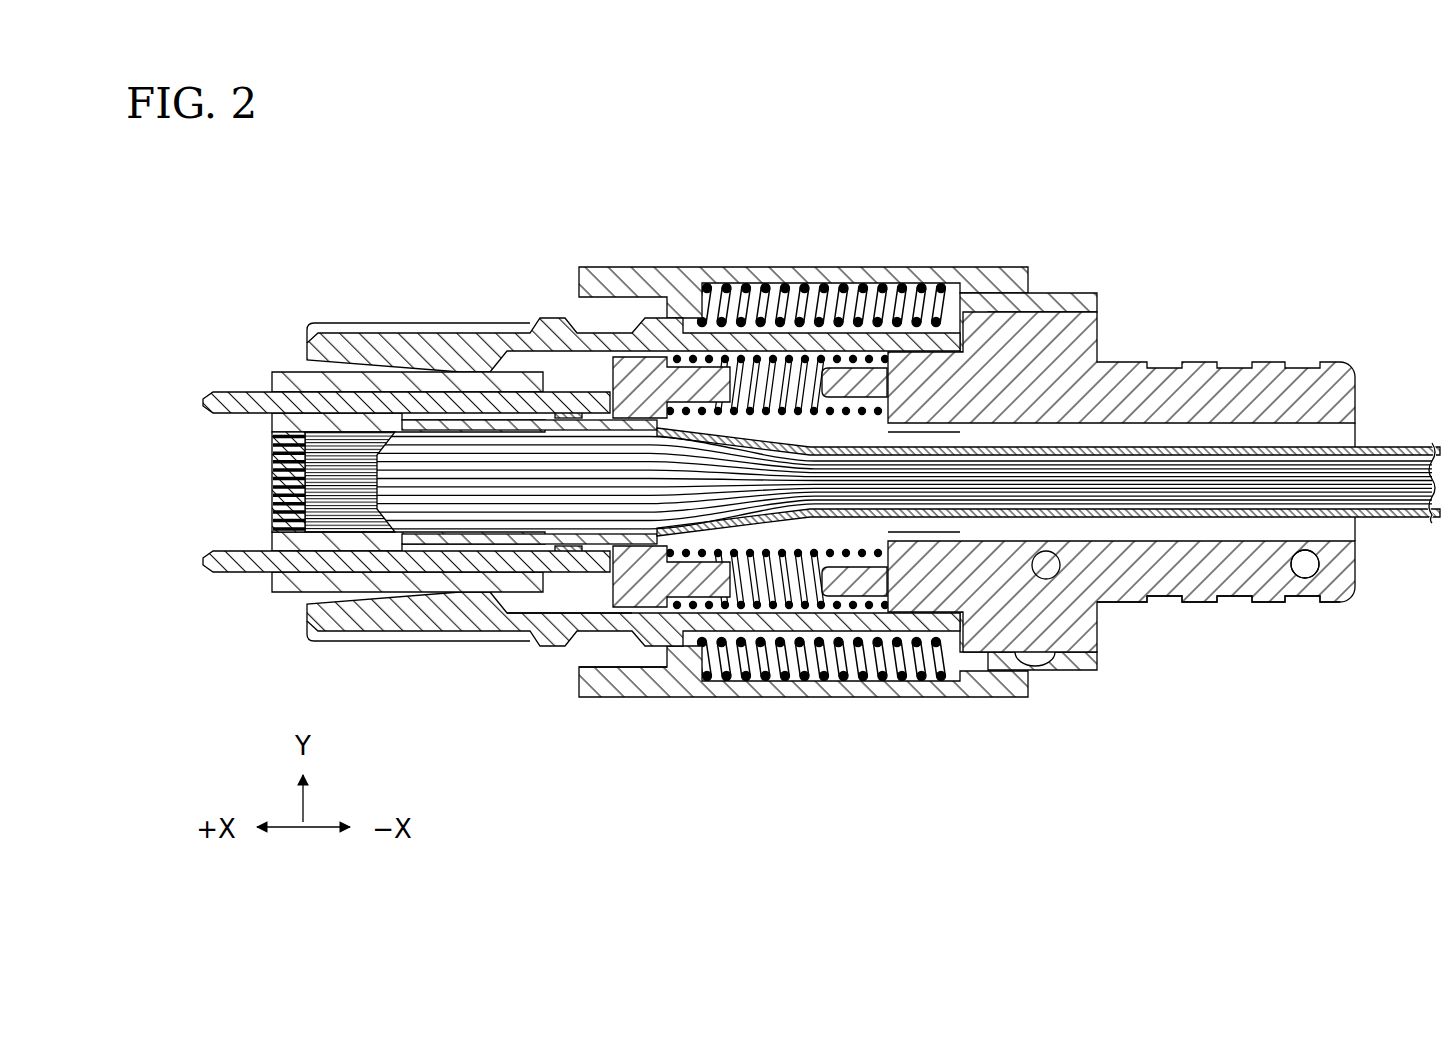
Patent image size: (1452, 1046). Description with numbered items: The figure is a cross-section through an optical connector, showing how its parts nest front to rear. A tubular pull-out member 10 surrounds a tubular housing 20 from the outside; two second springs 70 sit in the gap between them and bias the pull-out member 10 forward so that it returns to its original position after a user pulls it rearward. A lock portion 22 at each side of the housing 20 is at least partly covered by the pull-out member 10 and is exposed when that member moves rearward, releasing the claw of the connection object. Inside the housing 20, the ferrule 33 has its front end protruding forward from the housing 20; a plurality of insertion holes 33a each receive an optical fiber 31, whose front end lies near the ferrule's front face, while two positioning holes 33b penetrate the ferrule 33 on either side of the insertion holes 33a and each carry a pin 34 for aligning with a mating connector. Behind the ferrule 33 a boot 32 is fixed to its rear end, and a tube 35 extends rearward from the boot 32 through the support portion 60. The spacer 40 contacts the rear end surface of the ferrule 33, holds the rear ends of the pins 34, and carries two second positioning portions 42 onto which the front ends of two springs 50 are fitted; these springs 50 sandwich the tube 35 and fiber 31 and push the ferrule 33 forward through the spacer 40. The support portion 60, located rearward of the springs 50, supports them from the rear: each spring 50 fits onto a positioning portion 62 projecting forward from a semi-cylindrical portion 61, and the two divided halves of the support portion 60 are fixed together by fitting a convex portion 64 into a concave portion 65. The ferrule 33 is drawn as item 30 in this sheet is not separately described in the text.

The pull-out member 10 is at (660, 258).
The housing 20 is at (390, 319).
The lock portion 22 is at (637, 640).
The ferrule 30 is at (266, 365).
The optical fiber 31 is at (468, 428).
The boot 32 is at (589, 410).
The ferrule 33 is at (272, 541).
The insertion holes 33a is at (272, 478).
The positioning holes 33b is at (270, 563).
The pin 34 is at (235, 392).
The tube 35 is at (1395, 446).
The spacer 40 is at (560, 617).
The second positioning portion 42 is at (722, 592).
The spring 50 is at (773, 352).
The support portion 60 is at (1210, 346).
The semi-cylindrical portion 61 is at (1200, 582).
The positioning portion 62 is at (850, 370).
The convex portion 64 is at (1298, 560).
The concave portion 65 is at (1305, 570).
The second spring 70 is at (905, 300).